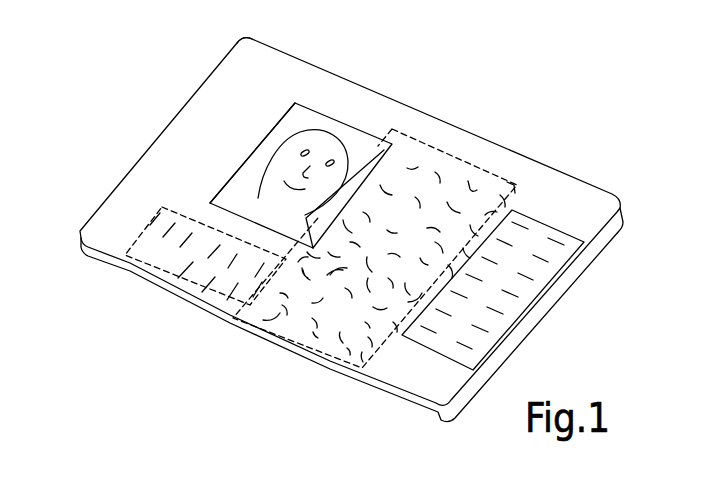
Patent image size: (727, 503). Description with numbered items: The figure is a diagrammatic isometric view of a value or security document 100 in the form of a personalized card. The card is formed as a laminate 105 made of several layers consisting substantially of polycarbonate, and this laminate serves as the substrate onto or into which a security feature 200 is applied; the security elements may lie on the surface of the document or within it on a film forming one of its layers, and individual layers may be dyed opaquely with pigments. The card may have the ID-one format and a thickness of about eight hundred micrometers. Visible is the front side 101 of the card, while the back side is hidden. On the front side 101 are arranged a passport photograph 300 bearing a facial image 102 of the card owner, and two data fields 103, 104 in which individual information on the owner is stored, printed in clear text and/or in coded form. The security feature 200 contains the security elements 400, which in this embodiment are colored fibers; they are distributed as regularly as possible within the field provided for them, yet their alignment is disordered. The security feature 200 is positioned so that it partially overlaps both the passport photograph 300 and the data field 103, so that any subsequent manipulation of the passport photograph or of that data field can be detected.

The value or security document 100 is at (351, 212).
The front side 101 is at (188, 126).
The facial image 102 is at (284, 166).
The data field 103 is at (139, 261).
The data field 104 is at (517, 318).
The laminate 105 is at (242, 34).
The security feature 200 is at (461, 157).
The passport photograph 300 is at (303, 106).
The security elements 400 is at (479, 184).